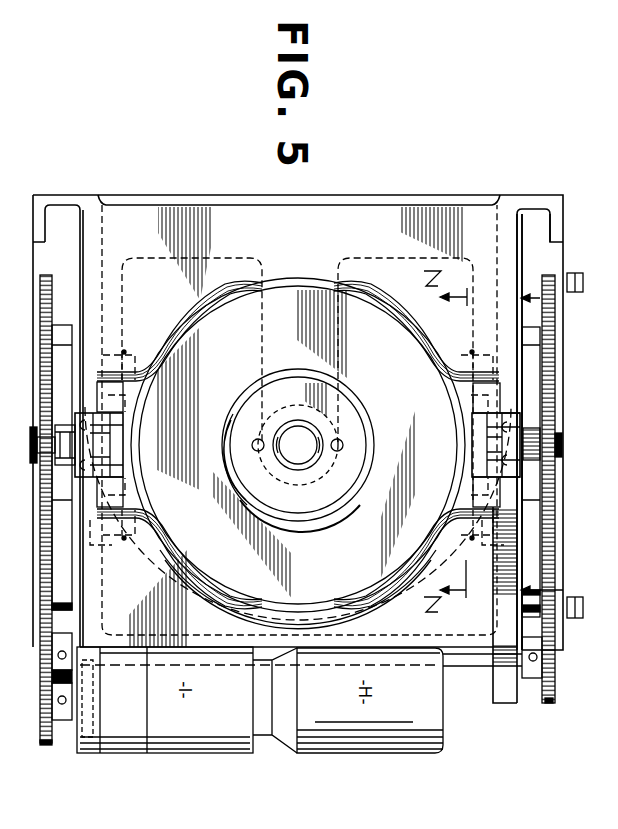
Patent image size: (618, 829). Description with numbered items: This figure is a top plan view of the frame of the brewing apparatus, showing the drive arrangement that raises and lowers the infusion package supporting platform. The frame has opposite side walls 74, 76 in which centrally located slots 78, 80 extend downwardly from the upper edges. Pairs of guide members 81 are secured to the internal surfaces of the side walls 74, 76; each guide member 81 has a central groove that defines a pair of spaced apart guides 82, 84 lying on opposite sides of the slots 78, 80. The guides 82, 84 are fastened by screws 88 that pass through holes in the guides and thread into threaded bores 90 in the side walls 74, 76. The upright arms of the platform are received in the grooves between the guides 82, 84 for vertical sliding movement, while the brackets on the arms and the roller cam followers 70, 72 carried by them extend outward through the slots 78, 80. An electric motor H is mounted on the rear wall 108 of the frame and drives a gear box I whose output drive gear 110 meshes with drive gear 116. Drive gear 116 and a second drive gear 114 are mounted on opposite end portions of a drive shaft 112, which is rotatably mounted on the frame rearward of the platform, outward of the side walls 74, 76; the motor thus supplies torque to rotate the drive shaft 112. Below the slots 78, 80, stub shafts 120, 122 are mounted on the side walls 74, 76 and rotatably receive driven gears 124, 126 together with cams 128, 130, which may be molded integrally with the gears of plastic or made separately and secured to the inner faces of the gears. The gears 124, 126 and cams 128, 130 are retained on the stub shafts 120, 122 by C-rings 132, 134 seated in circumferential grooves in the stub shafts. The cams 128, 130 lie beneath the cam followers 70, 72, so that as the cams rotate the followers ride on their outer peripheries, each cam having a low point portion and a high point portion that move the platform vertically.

The cam follower 70 is at (475, 450).
The cam follower 72 is at (62, 428).
The side wall 74 is at (516, 263).
The side wall 76 is at (87, 276).
The slot 78 is at (521, 479).
The slot 80 is at (124, 470).
The guide member 81 is at (152, 332).
The guide 82 is at (113, 552).
The guide 84 is at (126, 350).
The screw 88 is at (128, 393).
The threaded bore 90 is at (108, 548).
The rear wall 108 is at (368, 636).
The output drive gear 110 is at (44, 747).
The drive shaft 112 is at (460, 668).
The drive gear 114 is at (548, 708).
The drive gear 116 is at (42, 663).
The stub shaft 120 is at (545, 450).
The stub shaft 122 is at (38, 463).
The driven gear 124 is at (555, 333).
The driven gear 126 is at (38, 322).
The cam 128 is at (542, 388).
The cam 130 is at (58, 380).
The C-ring 132 is at (559, 460).
The C-ring 134 is at (33, 466).